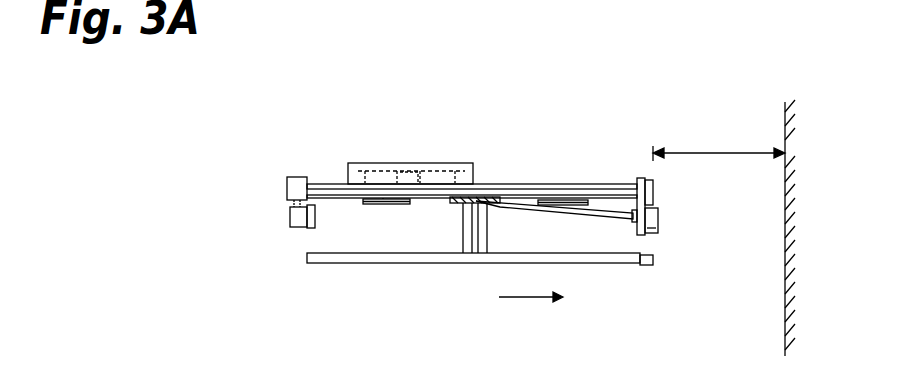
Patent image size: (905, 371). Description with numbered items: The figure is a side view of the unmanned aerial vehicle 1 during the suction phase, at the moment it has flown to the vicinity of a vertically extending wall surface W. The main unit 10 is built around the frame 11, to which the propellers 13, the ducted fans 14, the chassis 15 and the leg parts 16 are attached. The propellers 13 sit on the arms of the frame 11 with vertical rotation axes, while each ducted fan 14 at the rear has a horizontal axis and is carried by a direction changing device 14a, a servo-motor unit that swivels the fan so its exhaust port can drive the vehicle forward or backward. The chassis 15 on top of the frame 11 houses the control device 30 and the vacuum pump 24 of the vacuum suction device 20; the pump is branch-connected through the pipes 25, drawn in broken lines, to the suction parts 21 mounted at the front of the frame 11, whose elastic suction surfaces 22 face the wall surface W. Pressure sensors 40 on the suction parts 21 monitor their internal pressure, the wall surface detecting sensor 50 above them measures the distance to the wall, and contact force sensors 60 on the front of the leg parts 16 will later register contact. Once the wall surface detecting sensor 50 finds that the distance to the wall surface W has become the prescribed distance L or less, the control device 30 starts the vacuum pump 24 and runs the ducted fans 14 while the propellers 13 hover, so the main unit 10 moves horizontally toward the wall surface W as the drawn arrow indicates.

The unmanned aerial vehicle 1 is at (582, 127).
The main unit 10 is at (497, 186).
The frame 11 is at (524, 184).
The propellers 13 is at (382, 205).
The ducted fans 14 is at (289, 216).
The direction changing device 14a is at (286, 184).
The chassis 15 is at (347, 170).
The leg parts 16 is at (428, 264).
The vacuum suction device 20 is at (676, 215).
The suction parts 21 is at (657, 229).
The suction surface 22 is at (659, 212).
The vacuum pump 24 is at (438, 160).
The pipes 25 is at (536, 213).
The control device 30 is at (378, 160).
The pressure sensors 40 is at (634, 193).
The wall surface detecting sensor 50 is at (654, 185).
The contact force sensors 60 is at (651, 266).
The wall surface W is at (783, 307).
The prescribed distance L is at (719, 141).